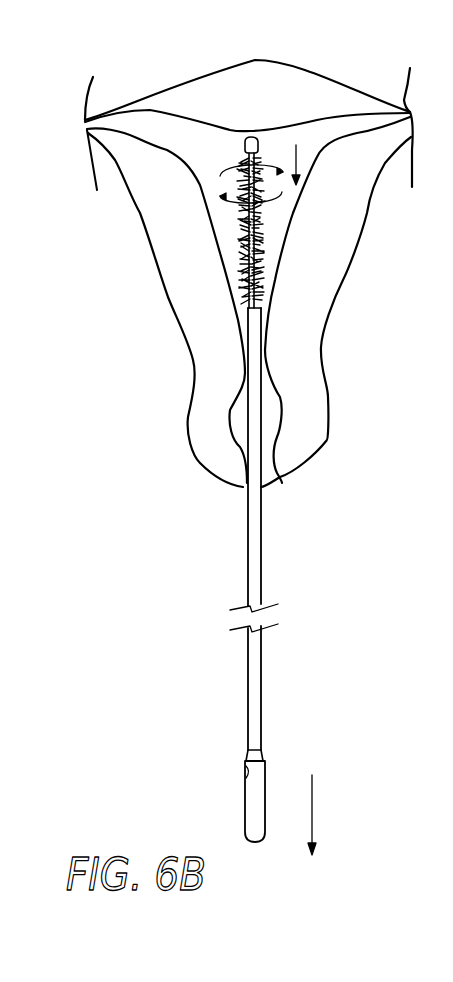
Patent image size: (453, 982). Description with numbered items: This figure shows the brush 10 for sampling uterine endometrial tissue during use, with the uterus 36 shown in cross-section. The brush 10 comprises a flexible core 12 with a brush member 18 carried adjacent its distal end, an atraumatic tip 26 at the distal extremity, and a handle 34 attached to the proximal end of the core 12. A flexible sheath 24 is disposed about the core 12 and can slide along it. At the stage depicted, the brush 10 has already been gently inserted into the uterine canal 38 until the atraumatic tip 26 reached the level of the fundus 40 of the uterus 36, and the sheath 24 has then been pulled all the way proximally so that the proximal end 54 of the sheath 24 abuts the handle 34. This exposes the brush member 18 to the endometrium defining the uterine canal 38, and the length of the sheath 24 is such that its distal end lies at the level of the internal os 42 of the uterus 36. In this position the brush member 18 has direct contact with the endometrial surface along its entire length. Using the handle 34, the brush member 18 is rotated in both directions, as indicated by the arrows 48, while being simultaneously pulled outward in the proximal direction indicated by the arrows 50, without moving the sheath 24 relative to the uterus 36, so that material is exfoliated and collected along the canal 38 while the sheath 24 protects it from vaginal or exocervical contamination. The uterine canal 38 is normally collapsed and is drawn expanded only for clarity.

The brush 10 is at (253, 440).
The flexible core 12 is at (258, 303).
The brush member 18 is at (263, 228).
The flexible sheath 24 is at (261, 533).
The atraumatic tip 26 is at (253, 135).
The handle 34 is at (247, 798).
The uterus 36 is at (313, 265).
The uterine canal 38 is at (237, 295).
The fundus 40 is at (200, 127).
The internal os 42 is at (230, 400).
The arrows indicating rotation 48 is at (240, 183).
The arrows indicating proximal pull 50 is at (297, 160).
The proximal end of the sheath 54 is at (262, 742).